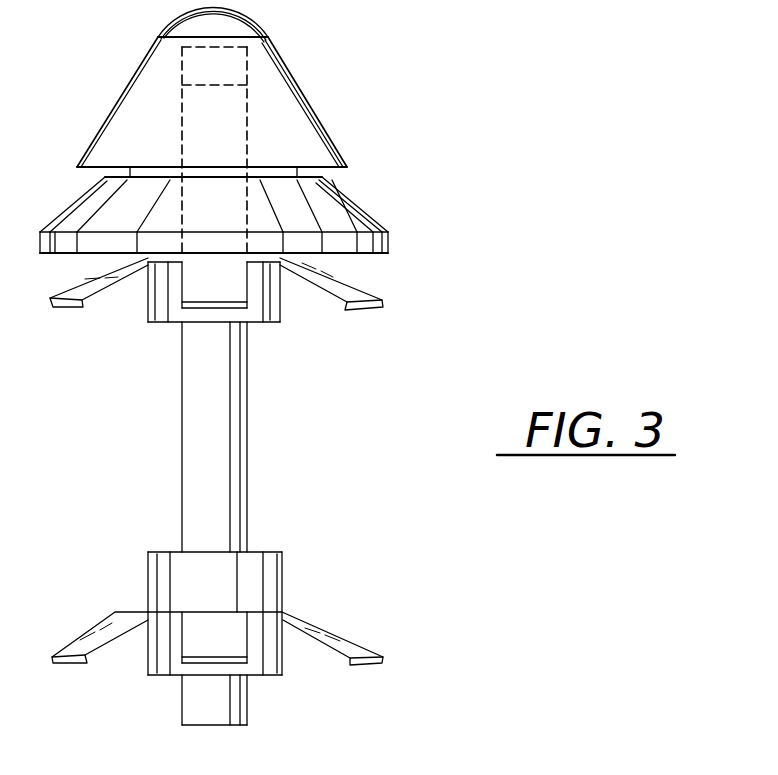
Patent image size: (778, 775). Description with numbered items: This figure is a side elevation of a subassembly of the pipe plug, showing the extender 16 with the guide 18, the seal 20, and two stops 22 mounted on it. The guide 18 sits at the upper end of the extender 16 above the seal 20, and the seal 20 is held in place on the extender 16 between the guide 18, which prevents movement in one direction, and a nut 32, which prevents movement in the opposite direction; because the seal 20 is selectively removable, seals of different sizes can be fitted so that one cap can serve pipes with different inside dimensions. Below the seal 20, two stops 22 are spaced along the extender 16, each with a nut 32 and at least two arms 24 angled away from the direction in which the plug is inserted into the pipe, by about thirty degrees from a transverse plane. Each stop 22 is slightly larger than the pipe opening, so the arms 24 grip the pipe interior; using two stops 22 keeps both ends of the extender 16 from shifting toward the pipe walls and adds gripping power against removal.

The extender 16 is at (247, 462).
The guide 18 is at (307, 100).
The seal 20 is at (372, 215).
The stop 22 is at (264, 495).
The arms 24 is at (187, 312).
The nut 32 is at (283, 305).